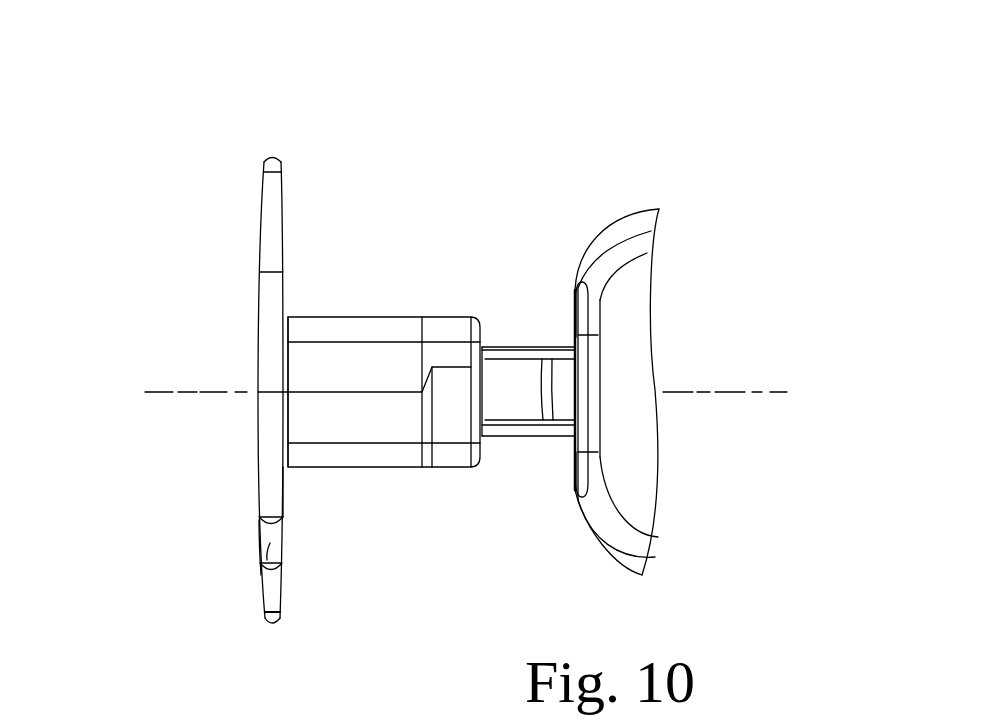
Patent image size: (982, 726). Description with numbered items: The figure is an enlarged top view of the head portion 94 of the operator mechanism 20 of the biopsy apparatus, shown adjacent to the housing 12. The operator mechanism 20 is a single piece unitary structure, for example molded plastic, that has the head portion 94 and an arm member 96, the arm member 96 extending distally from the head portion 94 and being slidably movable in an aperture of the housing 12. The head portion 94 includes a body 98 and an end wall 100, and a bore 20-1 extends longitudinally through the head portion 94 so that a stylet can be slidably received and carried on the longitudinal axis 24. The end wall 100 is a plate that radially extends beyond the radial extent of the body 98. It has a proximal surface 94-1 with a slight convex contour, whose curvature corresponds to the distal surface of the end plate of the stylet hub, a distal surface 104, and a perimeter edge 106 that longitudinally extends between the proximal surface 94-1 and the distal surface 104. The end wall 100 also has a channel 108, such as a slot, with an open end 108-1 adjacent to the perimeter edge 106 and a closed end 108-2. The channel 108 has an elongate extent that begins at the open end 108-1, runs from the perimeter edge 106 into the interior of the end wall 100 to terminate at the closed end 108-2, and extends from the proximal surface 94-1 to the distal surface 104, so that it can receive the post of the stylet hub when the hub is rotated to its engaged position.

The housing 12 is at (594, 212).
The operator mechanism 20 is at (134, 570).
The bore 20-1 is at (216, 379).
The longitudinal axis 24 is at (163, 395).
The head portion 94 is at (263, 378).
The proximal surface 94-1 is at (258, 500).
The arm member 96 is at (532, 440).
The body 98 is at (357, 317).
The end wall 100 is at (276, 141).
The distal surface 104 is at (283, 490).
The perimeter edge 106 is at (273, 628).
The channel 108 is at (285, 578).
The open end 108-1 is at (251, 535).
The closed end 108-2 is at (270, 543).